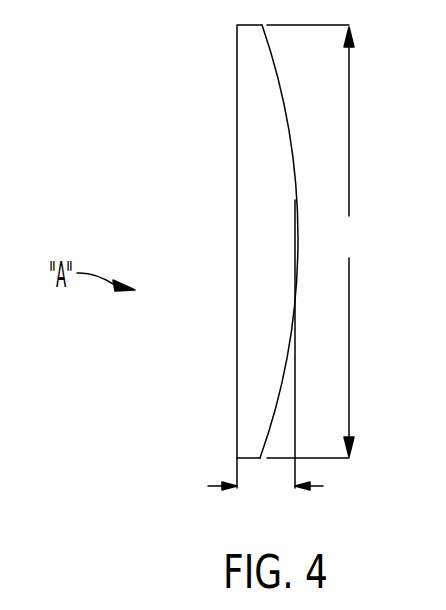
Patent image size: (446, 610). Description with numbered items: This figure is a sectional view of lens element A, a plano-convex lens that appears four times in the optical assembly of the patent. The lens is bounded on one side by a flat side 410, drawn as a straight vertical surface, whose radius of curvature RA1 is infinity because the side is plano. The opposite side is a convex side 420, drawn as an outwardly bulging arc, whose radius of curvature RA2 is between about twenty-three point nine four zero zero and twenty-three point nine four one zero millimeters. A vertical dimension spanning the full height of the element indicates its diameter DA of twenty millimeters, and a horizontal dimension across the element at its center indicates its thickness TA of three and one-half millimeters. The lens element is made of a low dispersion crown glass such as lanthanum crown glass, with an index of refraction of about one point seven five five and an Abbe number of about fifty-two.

The flat side 410 is at (237, 323).
The convex side 420 is at (282, 90).
The radius of curvature of flat side RA1 is at (237, 155).
The radius of curvature of convex side RA2 is at (297, 198).
The diameter DA is at (314, 241).
The thickness TA is at (265, 366).